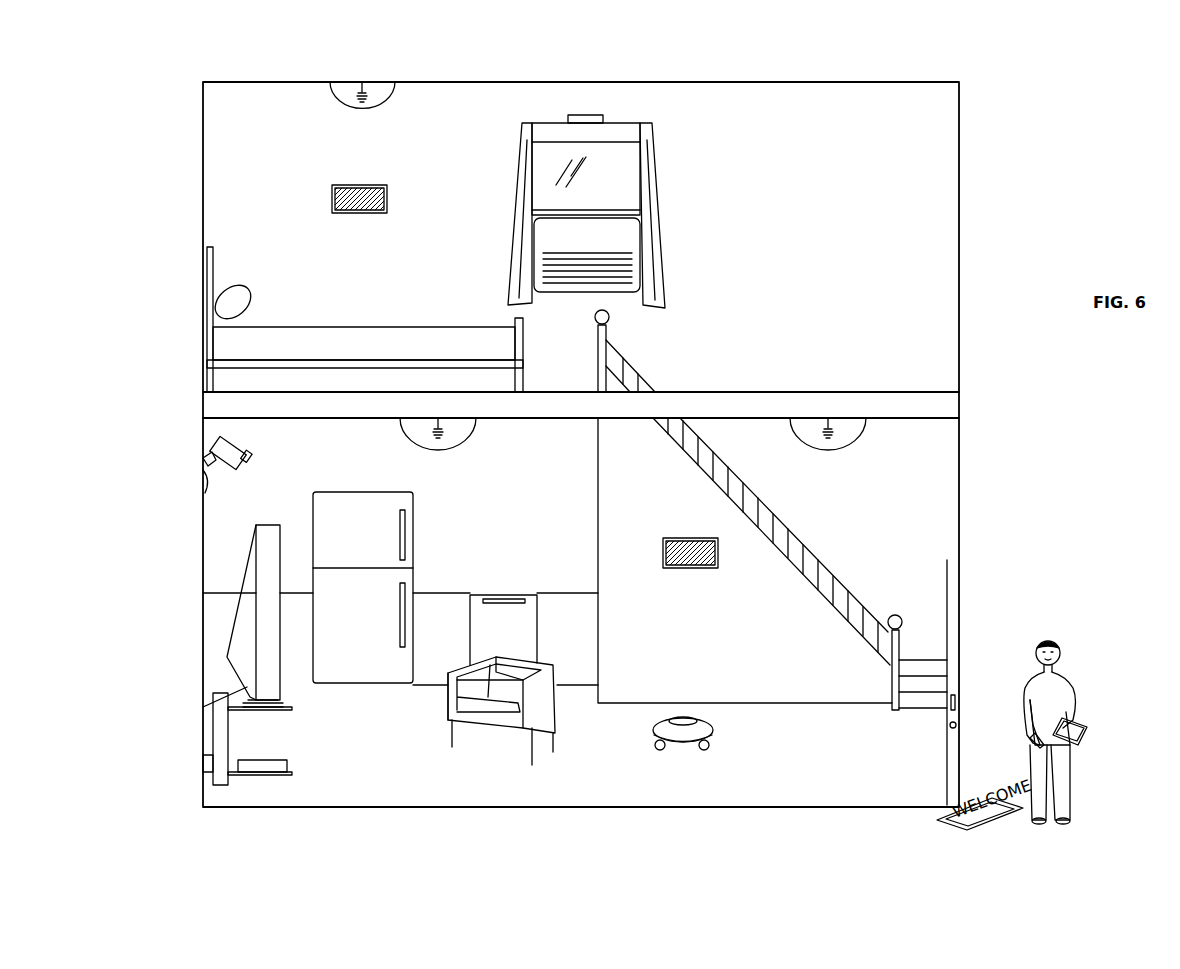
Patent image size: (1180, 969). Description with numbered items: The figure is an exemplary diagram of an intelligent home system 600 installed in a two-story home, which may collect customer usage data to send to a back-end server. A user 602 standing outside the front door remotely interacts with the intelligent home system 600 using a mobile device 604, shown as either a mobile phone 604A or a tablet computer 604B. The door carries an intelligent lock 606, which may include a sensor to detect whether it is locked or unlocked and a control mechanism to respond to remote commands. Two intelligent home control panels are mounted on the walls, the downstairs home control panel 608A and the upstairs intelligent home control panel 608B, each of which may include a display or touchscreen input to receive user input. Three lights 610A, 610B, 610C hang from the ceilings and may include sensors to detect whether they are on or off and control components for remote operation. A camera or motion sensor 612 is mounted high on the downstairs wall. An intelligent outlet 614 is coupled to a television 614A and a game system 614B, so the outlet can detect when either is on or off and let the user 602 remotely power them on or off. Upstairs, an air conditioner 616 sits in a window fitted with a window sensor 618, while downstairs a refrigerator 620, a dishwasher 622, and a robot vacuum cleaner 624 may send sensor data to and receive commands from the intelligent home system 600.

The intelligent home system 600 is at (1038, 58).
The user 602 is at (1037, 678).
The mobile device 604 is at (1038, 738).
The mobile phone 604A is at (1030, 738).
The tablet computer 604B is at (1073, 745).
The intelligent lock 606 is at (955, 730).
The downstairs home control panel 608A is at (690, 571).
The upstairs intelligent home control panel 608B is at (343, 216).
The light 610A is at (853, 424).
The light 610B is at (461, 424).
The light 610C is at (343, 95).
The camera or motion sensor 612 is at (226, 448).
The intelligent outlet 614 is at (208, 763).
The television 614A is at (247, 570).
The game system 614B is at (268, 766).
The air conditioner 616 is at (548, 238).
The window sensor 618 is at (585, 112).
The refrigerator 620 is at (333, 490).
The dishwasher 622 is at (538, 618).
The robot vacuum cleaner 624 is at (700, 727).